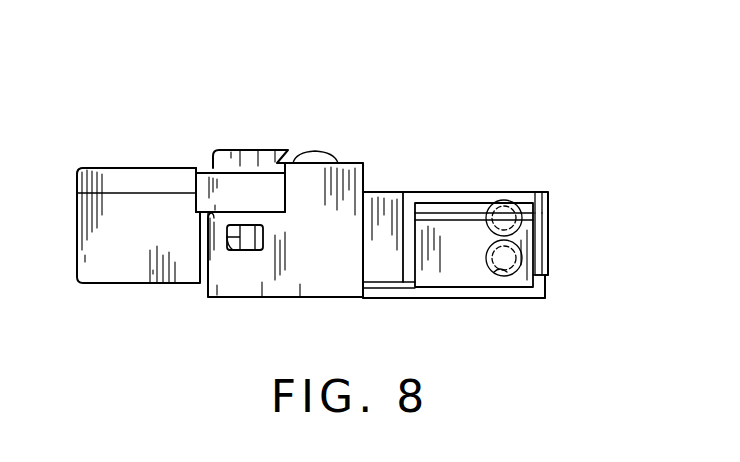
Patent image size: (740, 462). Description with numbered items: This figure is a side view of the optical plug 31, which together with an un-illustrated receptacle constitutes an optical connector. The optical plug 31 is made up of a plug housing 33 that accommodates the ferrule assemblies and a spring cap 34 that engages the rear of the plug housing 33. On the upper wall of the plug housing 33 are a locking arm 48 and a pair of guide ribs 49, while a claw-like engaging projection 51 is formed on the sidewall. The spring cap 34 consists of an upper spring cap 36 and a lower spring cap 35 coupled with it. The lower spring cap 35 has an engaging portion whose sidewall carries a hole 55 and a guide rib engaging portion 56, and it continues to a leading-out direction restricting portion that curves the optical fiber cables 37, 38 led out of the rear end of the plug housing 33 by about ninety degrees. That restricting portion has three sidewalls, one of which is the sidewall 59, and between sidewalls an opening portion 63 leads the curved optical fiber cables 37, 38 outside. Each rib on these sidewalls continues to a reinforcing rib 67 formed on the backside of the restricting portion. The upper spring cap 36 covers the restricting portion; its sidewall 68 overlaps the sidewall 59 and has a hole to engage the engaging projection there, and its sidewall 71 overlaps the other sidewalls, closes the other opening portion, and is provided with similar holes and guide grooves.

The optical plug 31 is at (130, 112).
The plug housing 33 is at (117, 283).
The spring cap 34 is at (415, 92).
The lower spring cap 35 is at (358, 162).
The upper spring cap 36 is at (525, 192).
The optical fiber cable 37 is at (550, 273).
The optical fiber cable 38 is at (550, 215).
The locking arm 48 is at (268, 150).
The guide rib 49 is at (232, 185).
The engaging projection 51 is at (227, 245).
The hole 55 is at (242, 240).
The guide rib engaging portion 56 is at (318, 162).
The sidewall 59 is at (443, 268).
The opening portion 63 is at (505, 273).
The reinforcing rib 67 is at (382, 298).
The sidewall 68 is at (388, 202).
The sidewall 71 is at (550, 250).